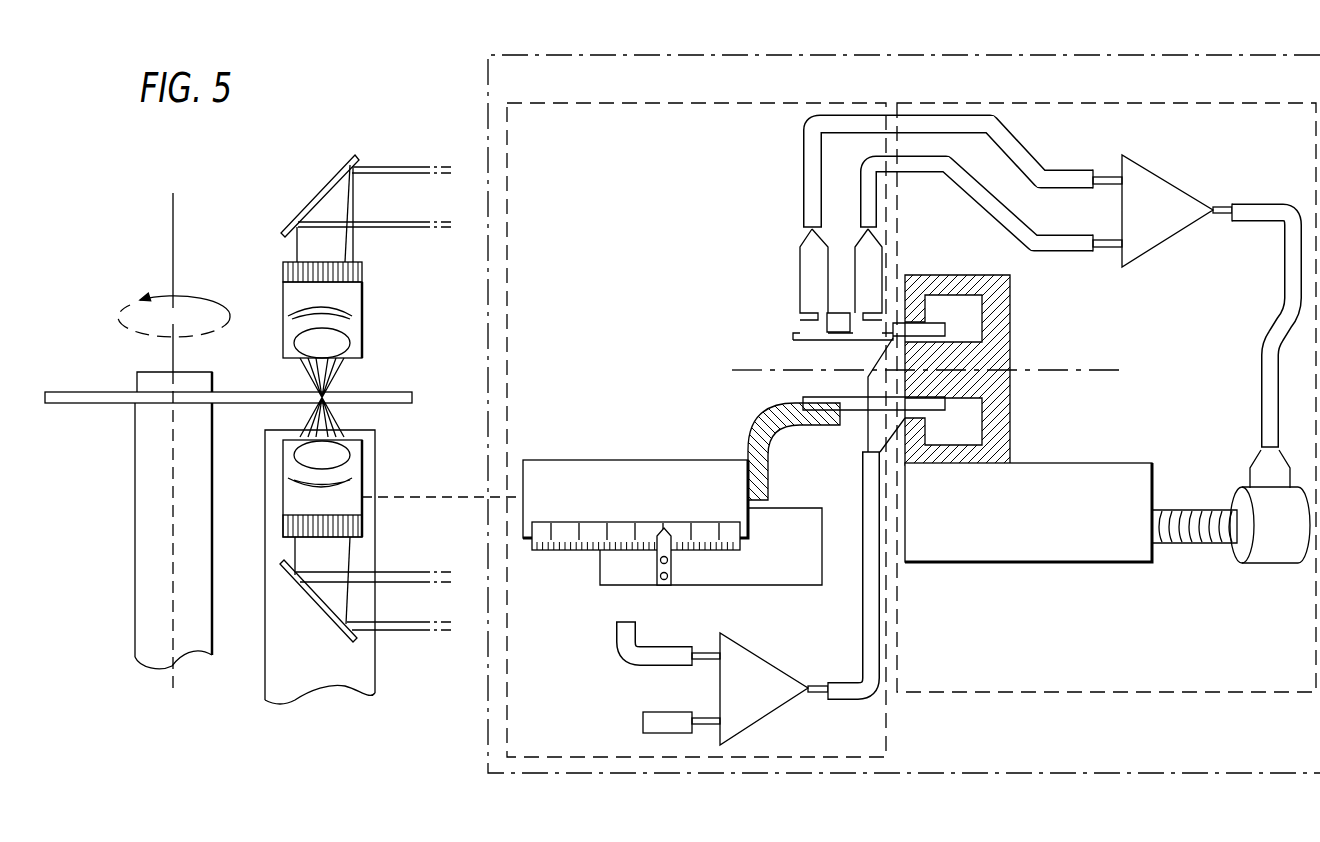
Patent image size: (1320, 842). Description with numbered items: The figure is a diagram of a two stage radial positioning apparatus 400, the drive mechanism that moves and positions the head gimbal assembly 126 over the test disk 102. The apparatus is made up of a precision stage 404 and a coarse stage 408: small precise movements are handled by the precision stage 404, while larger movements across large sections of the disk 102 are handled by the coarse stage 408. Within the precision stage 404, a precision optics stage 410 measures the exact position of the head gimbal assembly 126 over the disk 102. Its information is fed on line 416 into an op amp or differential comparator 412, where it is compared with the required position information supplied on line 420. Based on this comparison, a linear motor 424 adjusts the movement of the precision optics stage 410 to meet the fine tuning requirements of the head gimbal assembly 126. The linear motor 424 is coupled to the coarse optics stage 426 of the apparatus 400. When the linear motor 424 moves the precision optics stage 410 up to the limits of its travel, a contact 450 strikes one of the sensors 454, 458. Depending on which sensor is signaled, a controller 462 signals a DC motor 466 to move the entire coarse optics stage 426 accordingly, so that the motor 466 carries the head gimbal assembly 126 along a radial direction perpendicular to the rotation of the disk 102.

The disk 102 is at (63, 405).
The head gimbal assembly 126 is at (385, 482).
The two stage radial positioning apparatus 400 is at (480, 107).
The precision stage 404 is at (516, 766).
The coarse stage 408 is at (1062, 700).
The precision optics stage 410 is at (516, 541).
The differential comparator 412 is at (775, 709).
The line 416 is at (616, 655).
The line 420 is at (643, 722).
The linear motor 424 is at (1010, 342).
The coarse optics stage 426 is at (1022, 563).
The contact 450 is at (838, 328).
The sensor 454 is at (812, 270).
The sensor 458 is at (878, 267).
The controller 462 is at (1176, 189).
The DC motor 466 is at (1272, 556).